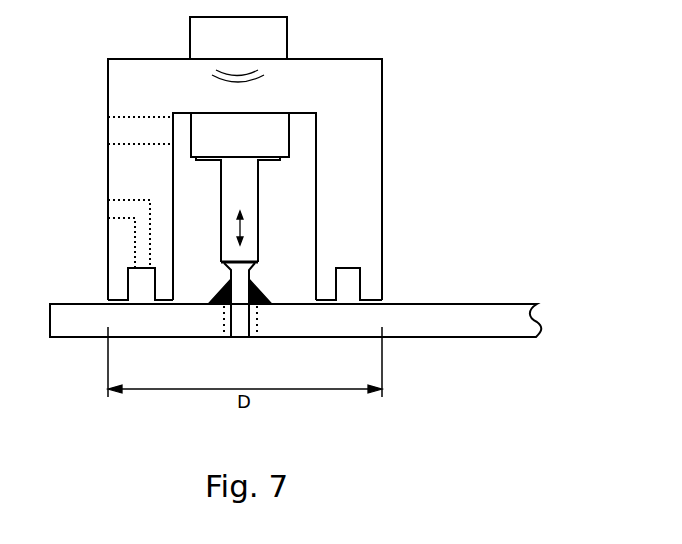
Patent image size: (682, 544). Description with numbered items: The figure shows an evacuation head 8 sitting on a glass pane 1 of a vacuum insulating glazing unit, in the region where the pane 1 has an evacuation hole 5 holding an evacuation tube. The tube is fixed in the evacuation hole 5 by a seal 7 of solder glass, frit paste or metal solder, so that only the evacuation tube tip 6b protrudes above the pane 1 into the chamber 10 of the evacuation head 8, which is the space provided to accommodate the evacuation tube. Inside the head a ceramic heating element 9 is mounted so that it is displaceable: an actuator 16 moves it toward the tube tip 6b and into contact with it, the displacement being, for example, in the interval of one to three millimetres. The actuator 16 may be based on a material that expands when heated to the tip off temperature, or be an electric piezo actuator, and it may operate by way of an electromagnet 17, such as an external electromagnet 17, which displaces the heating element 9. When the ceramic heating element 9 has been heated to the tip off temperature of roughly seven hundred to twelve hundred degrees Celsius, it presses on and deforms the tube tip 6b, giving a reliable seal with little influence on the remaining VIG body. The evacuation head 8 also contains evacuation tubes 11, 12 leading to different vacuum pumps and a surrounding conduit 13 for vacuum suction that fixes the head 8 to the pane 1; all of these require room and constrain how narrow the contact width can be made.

The pane 1 is at (530, 314).
The evacuation hole 5 is at (259, 322).
The evacuation tube tip 6b is at (243, 275).
The seal 7 is at (218, 291).
The evacuation head 8 is at (127, 85).
The ceramic heating element 9 is at (246, 193).
The chamber 10 is at (209, 203).
The evacuation tube 11 is at (129, 210).
The evacuation tube 12 is at (129, 131).
The surrounding conduit 13 is at (352, 273).
The actuator 16 is at (240, 135).
The electromagnet 17 is at (238, 38).